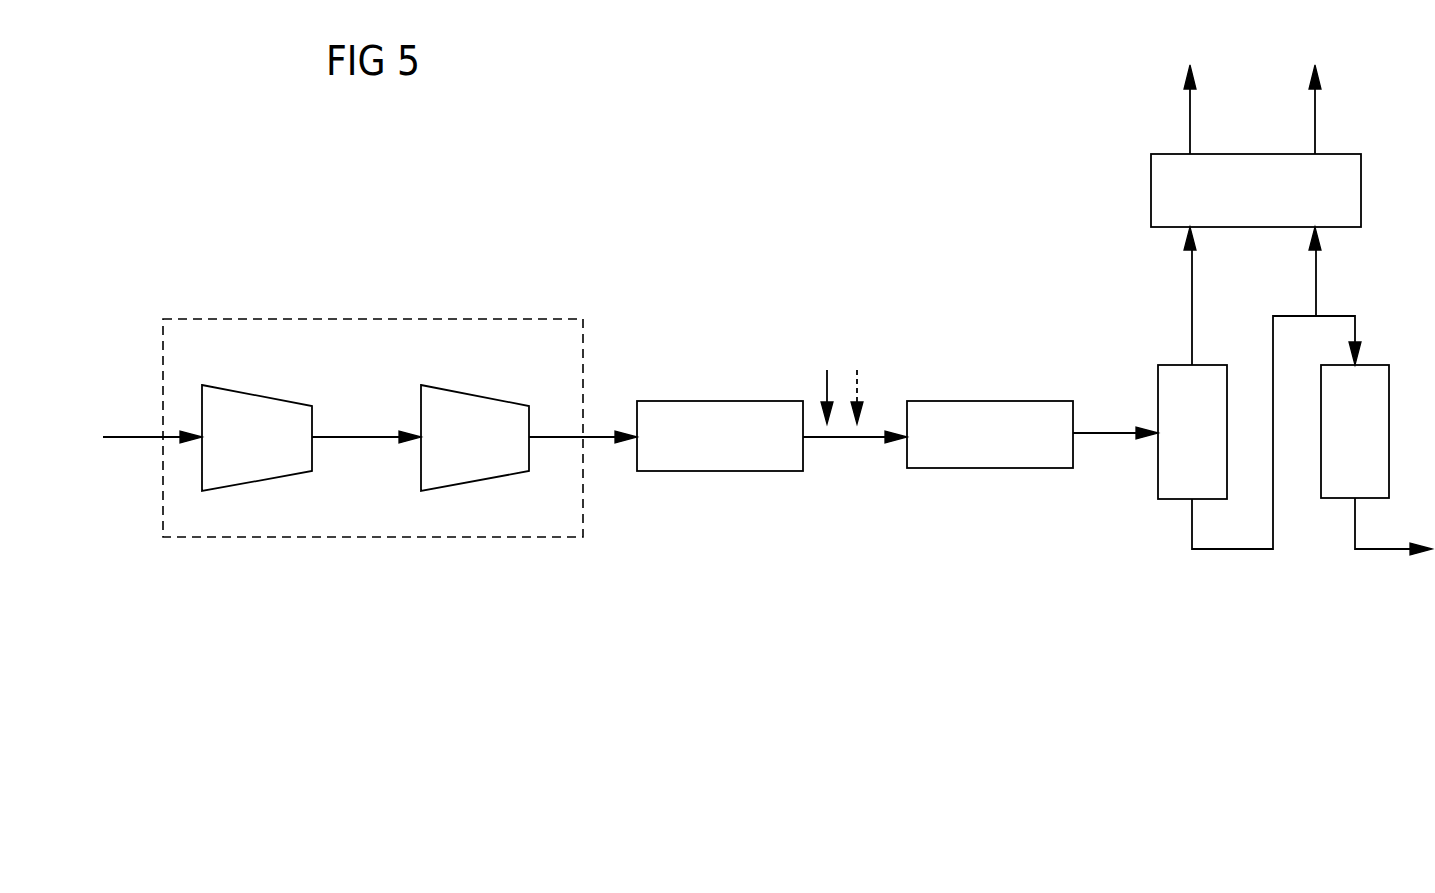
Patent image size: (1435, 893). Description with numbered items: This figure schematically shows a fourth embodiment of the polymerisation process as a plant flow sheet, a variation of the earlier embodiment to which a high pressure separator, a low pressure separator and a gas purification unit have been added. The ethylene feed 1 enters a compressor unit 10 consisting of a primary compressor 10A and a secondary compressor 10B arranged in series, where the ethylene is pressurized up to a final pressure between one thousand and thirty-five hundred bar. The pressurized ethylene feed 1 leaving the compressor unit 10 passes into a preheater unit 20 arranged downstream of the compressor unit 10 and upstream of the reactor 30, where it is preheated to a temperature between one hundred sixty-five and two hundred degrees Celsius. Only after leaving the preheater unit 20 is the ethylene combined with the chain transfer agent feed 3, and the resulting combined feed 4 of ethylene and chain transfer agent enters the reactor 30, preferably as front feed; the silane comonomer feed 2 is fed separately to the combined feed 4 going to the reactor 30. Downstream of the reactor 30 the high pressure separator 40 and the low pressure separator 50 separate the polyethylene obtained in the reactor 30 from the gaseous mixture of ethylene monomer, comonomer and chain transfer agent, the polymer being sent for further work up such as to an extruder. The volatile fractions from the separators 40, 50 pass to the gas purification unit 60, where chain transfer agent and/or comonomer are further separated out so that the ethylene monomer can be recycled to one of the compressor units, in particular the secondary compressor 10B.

The ethylene feed 1 is at (370, 421).
The silane comonomer feed 2 is at (829, 381).
The chain transfer agent feed 3 is at (858, 381).
The combined feed 4 is at (855, 423).
The compressor unit 10 is at (402, 318).
The primary compressor 10A is at (243, 392).
The secondary compressor 10B is at (465, 392).
The preheater unit 20 is at (713, 403).
The polymerisation reactor 30 is at (983, 401).
The high pressure separator 40 is at (1170, 481).
The low pressure separator 50 is at (1340, 487).
The gas purification unit 60 is at (1160, 192).